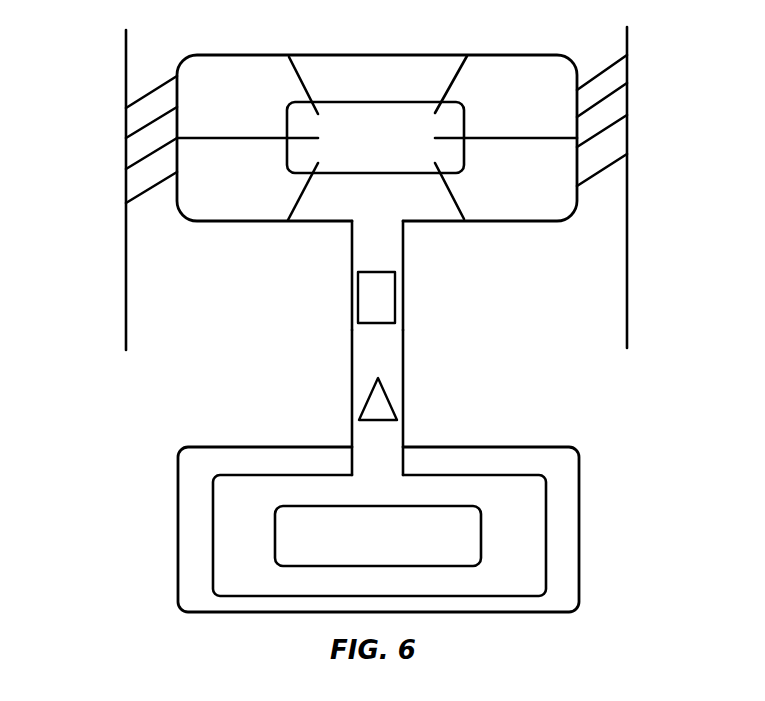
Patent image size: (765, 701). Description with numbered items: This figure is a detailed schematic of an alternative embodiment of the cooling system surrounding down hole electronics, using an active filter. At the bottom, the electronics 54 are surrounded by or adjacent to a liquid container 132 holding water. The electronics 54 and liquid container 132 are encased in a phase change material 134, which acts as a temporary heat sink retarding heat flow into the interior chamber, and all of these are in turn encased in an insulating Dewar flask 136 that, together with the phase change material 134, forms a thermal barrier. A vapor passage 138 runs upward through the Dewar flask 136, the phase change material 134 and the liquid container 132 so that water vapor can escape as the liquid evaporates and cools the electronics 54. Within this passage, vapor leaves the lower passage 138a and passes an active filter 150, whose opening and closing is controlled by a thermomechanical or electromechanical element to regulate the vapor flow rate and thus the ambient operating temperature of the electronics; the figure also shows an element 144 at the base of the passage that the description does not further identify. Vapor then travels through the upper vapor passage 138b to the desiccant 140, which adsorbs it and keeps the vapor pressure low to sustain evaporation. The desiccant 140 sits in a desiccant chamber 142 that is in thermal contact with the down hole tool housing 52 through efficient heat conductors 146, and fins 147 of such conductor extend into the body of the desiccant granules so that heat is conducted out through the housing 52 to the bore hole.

The down hole tool housing 52 is at (377, 188).
The electronics 54 is at (407, 546).
The liquid container 132 is at (438, 512).
The phase change material 134 is at (438, 512).
The insulating Dewar flask 136 is at (330, 529).
The vapor passage 138 is at (433, 348).
The lower passage 138a is at (432, 401).
The upper vapor passage 138b is at (433, 275).
The desiccant 140 is at (419, 129).
The desiccant chamber 142 is at (447, 137).
The valve / triangular element 144 is at (429, 395).
The efficient heat conductors 146 is at (377, 121).
The fins 147 is at (396, 121).
The active filter 150 is at (429, 290).